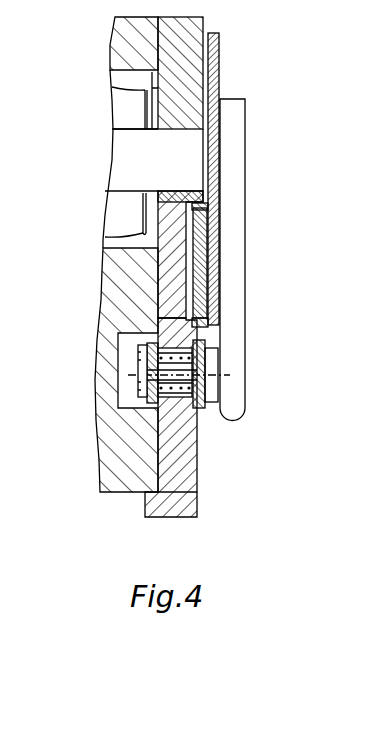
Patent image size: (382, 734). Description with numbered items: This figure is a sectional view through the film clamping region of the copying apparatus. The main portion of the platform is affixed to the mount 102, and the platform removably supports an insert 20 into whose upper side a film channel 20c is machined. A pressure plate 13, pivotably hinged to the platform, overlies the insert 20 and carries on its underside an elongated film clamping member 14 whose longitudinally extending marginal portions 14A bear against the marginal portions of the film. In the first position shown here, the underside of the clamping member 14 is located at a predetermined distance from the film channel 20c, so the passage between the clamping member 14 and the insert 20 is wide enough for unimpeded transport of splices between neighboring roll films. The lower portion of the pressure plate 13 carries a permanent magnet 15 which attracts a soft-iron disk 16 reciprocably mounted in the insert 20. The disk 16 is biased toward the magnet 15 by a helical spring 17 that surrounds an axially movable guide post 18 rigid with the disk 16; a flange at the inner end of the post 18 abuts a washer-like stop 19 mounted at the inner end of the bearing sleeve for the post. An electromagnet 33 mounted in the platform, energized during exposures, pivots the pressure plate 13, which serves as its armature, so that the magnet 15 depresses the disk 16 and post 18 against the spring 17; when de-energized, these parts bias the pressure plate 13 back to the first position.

The pressure plate 13 is at (219, 85).
The film clamping member 14 is at (207, 240).
The marginal portions 14A is at (208, 212).
The permanent magnet 15 is at (208, 370).
The soft-iron disk 16 is at (205, 408).
The helical spring 17 is at (200, 338).
The guide post 18 is at (197, 450).
The washer-like stop 19 is at (136, 366).
The insert 20 is at (197, 507).
The film channel 20c is at (185, 259).
The electromagnet 33 is at (122, 147).
The mount 102 is at (123, 480).